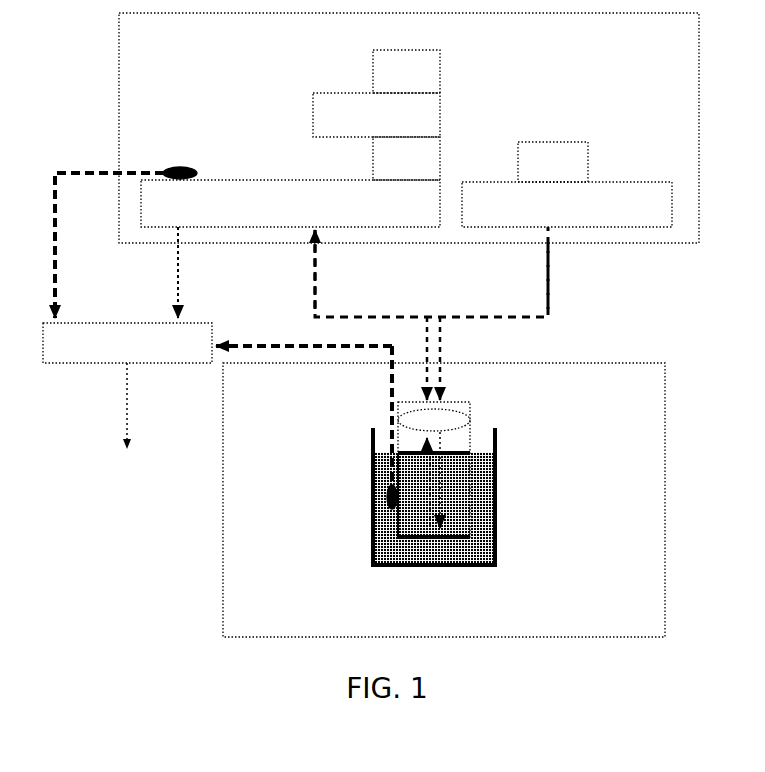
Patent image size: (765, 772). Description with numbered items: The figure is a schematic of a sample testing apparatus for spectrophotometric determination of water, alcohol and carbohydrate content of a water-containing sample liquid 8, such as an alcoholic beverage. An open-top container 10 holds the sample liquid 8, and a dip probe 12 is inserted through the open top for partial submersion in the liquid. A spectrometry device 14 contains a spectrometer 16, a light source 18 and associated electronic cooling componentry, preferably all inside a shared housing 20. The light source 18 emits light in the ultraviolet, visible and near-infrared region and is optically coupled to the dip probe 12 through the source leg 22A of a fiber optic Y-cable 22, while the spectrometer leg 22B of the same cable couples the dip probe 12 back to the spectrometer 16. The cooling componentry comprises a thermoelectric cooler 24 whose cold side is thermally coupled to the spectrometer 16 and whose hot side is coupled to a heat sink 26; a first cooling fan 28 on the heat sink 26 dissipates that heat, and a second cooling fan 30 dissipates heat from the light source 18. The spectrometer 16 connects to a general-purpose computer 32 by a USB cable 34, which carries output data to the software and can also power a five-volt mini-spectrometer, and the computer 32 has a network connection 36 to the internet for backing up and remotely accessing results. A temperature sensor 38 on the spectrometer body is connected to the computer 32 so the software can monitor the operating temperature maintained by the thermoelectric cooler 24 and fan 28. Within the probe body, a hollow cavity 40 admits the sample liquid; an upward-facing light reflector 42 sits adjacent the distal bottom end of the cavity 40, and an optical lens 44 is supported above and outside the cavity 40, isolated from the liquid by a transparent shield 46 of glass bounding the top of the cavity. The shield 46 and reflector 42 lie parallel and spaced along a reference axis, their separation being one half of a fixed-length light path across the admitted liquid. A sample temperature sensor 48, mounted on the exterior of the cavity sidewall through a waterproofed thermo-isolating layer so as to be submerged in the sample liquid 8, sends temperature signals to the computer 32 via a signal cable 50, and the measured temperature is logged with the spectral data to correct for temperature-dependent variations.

The sample liquid 8 is at (480, 518).
The container 10 is at (368, 565).
The dip probe 12 is at (476, 410).
The spectrometry device 14 is at (549, 80).
The spectrometer 16 is at (387, 216).
The light source 18 is at (632, 216).
The shared housing 20 is at (655, 248).
The fiber optic Y-cable 22 is at (554, 296).
The source leg 22A is at (541, 272).
The spectrometer leg 22B is at (320, 272).
The thermoelectric cooler 24 is at (372, 160).
The heat sink 26 is at (312, 113).
The first cooling fan 28 is at (372, 72).
The second cooling fan 30 is at (590, 162).
The computer 32 is at (125, 320).
The USB cable 34 is at (183, 272).
The network connection 36 is at (133, 406).
The temperature sensor 38 is at (178, 162).
The hollow cavity 40 is at (464, 493).
The light reflector 42 is at (459, 544).
The optical lens 44 is at (464, 406).
The transparent shield 46 is at (478, 452).
The sample temperature sensor 48 is at (384, 497).
The signal cable 50 is at (62, 212).